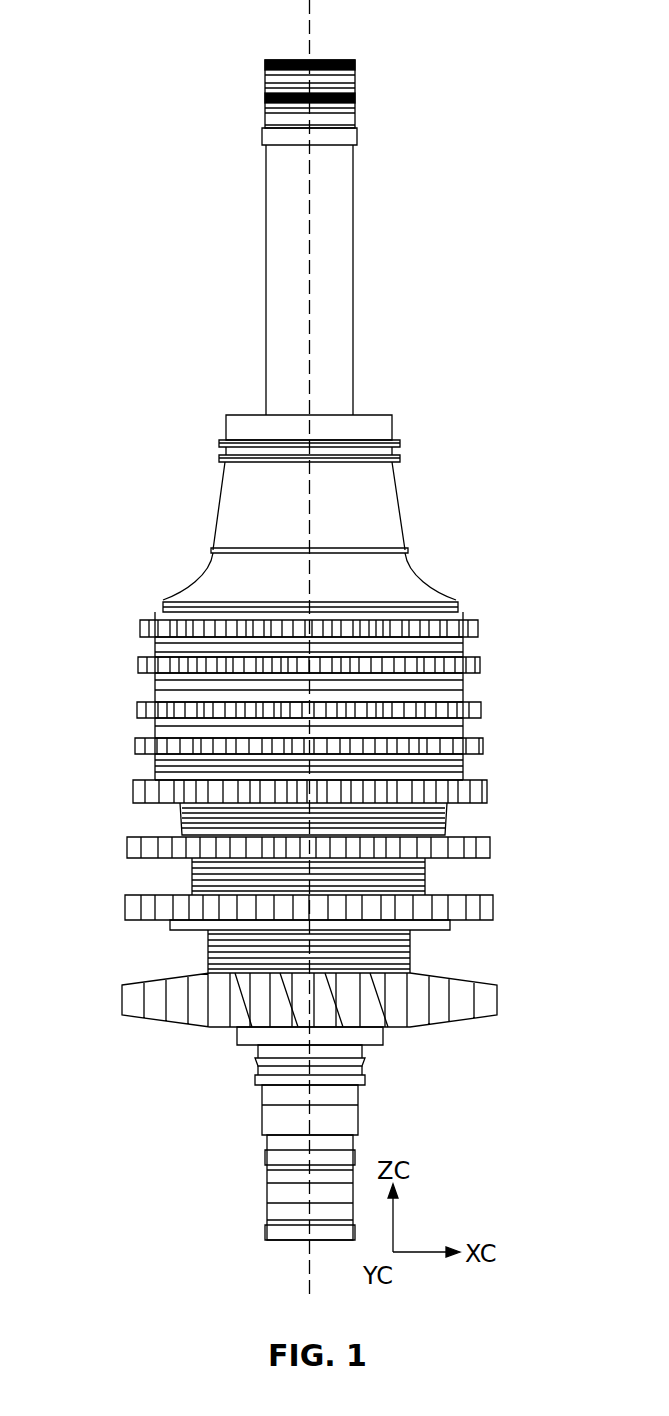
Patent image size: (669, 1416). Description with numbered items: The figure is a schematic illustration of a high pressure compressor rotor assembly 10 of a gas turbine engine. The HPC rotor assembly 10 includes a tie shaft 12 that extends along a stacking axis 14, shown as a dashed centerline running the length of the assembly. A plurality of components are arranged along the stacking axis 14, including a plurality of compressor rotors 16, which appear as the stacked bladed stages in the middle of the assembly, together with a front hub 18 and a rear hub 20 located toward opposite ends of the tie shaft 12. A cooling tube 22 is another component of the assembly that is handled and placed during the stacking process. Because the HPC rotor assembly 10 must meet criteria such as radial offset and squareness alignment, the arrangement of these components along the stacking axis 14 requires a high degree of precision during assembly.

The high pressure compressor rotor assembly 10 is at (114, 37).
The tie shaft 12 is at (342, 192).
The stacking axis 14 is at (311, 42).
The compressor rotors 16 is at (479, 628).
The front hub 18 is at (353, 1124).
The rear hub 20 is at (390, 503).
The cooling tube 22 is at (220, 441).